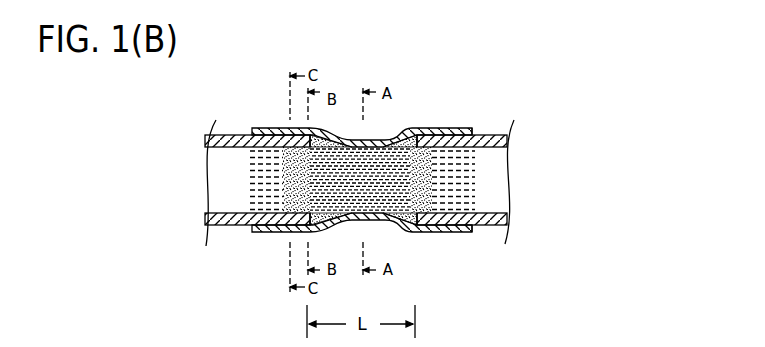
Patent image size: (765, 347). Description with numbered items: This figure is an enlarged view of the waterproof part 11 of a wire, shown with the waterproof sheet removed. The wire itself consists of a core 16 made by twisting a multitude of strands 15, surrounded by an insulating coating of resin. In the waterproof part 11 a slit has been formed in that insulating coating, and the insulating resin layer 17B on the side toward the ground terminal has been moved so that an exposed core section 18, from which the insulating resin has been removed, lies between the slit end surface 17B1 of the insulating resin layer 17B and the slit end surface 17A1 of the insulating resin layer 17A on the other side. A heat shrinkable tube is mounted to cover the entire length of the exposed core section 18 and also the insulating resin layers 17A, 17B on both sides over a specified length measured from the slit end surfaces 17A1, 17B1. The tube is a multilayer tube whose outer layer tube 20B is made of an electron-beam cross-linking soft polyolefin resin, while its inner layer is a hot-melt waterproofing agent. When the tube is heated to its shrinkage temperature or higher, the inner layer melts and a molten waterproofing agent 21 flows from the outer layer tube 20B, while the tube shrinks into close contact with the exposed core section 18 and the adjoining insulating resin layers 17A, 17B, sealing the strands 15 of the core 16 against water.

The waterproof part 11 is at (398, 63).
The strands 15 is at (392, 137).
The core 16 is at (427, 64).
The insulating resin layer 17A is at (236, 135).
The insulating resin layer 17B is at (488, 134).
The slit end surface 17A1 is at (287, 229).
The slit end surface 17B1 is at (409, 236).
The exposed core section 18 is at (393, 227).
The outer layer tube 20B is at (464, 234).
The molten waterproofing agent 21 is at (348, 141).